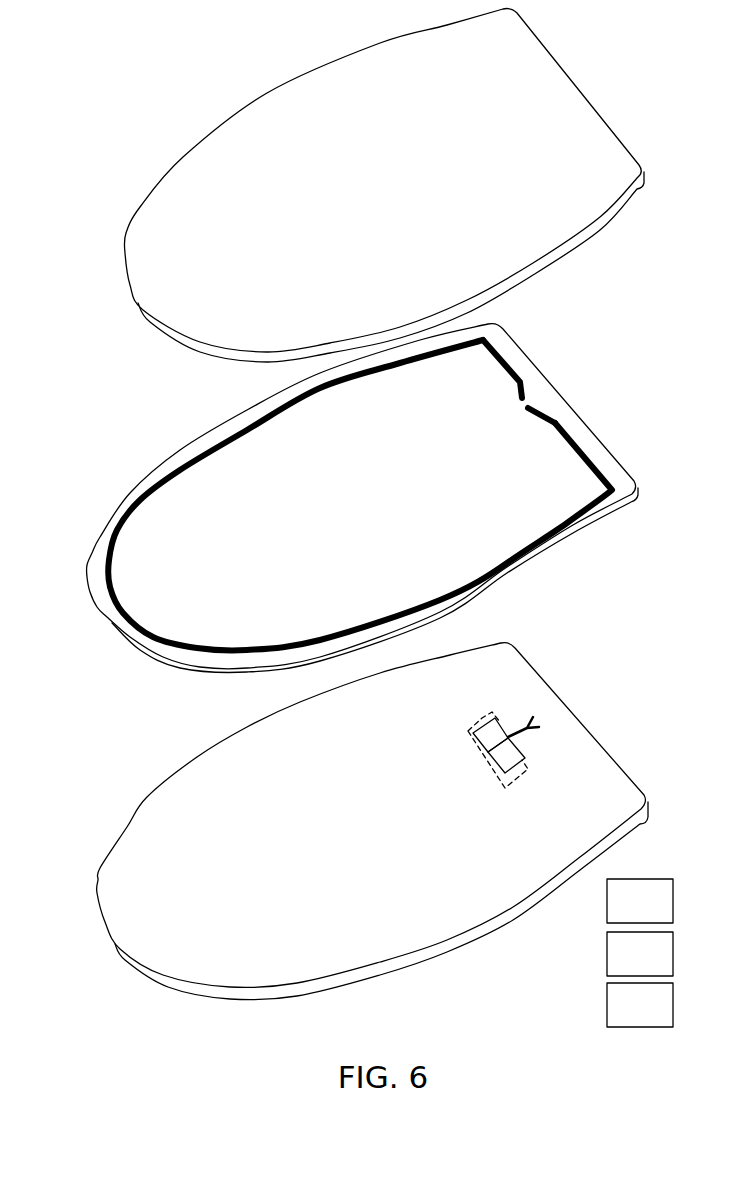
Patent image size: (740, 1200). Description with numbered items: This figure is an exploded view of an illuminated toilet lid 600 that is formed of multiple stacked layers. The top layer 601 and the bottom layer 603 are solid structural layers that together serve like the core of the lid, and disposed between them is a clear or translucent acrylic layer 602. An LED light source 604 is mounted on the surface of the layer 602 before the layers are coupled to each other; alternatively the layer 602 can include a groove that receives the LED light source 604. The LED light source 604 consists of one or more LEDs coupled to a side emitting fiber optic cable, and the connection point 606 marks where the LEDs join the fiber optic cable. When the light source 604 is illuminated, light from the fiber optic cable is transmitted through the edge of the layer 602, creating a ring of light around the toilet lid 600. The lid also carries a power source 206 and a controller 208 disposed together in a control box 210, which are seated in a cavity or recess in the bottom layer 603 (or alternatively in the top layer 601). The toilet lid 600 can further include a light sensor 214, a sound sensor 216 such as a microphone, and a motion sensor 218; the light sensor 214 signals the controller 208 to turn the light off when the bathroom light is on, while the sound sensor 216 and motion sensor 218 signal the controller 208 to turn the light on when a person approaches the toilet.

The toilet lid 600 is at (124, 64).
The top layer 601 is at (384, 186).
The clear or translucent layer 602 is at (353, 498).
The bottom layer 603 is at (372, 821).
The LED light source 604 is at (170, 463).
The connection point 606 is at (530, 393).
The power source 206 is at (490, 732).
The controller 208 is at (526, 759).
The control box 210 is at (489, 776).
The light sensor 214 is at (640, 901).
The sound sensor 216 is at (640, 954).
The motion sensor 218 is at (640, 1005).